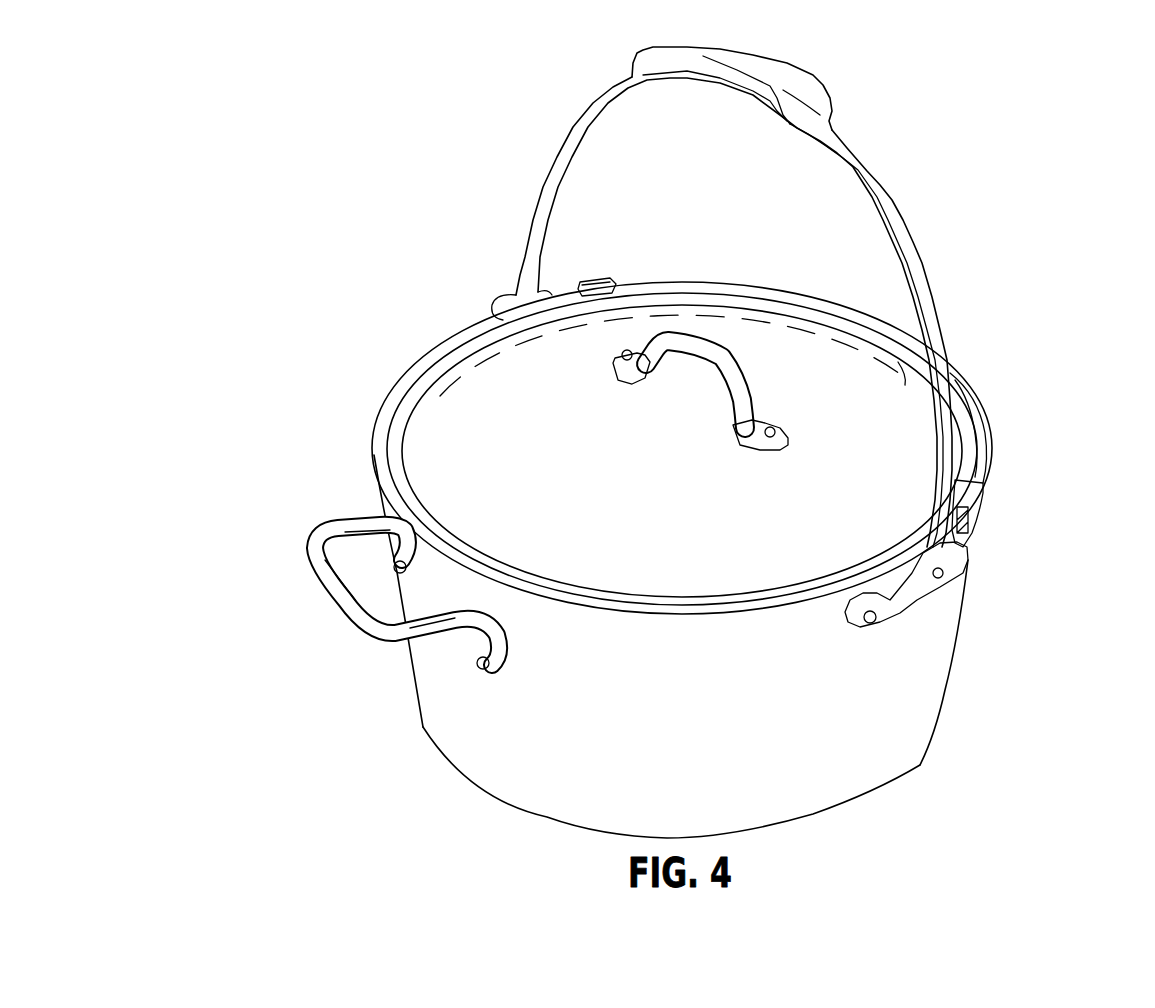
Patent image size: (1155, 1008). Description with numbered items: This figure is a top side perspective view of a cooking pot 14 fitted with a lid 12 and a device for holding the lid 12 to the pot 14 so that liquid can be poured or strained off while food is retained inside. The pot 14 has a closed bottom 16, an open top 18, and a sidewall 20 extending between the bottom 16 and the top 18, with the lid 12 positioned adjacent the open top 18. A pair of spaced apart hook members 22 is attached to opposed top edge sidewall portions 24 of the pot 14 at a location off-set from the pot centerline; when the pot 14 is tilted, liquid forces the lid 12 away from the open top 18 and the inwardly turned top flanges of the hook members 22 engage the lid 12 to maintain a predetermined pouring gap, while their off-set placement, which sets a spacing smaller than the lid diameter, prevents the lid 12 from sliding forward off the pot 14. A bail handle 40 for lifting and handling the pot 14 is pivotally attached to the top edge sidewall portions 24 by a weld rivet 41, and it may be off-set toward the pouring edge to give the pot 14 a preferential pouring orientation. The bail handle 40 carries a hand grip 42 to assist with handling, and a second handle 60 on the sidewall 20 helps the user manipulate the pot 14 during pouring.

The lid 12 is at (747, 333).
The pot 14 is at (933, 690).
The closed bottom 16 is at (590, 826).
The open top 18 is at (708, 612).
The sidewall 20 is at (493, 728).
The hook members 22 is at (597, 281).
The top edge sidewall portions 24 is at (830, 630).
The bail handle 40 is at (888, 218).
The weld rivet 41 is at (965, 572).
The hand grip 42 is at (817, 77).
The second handle 60 is at (318, 568).